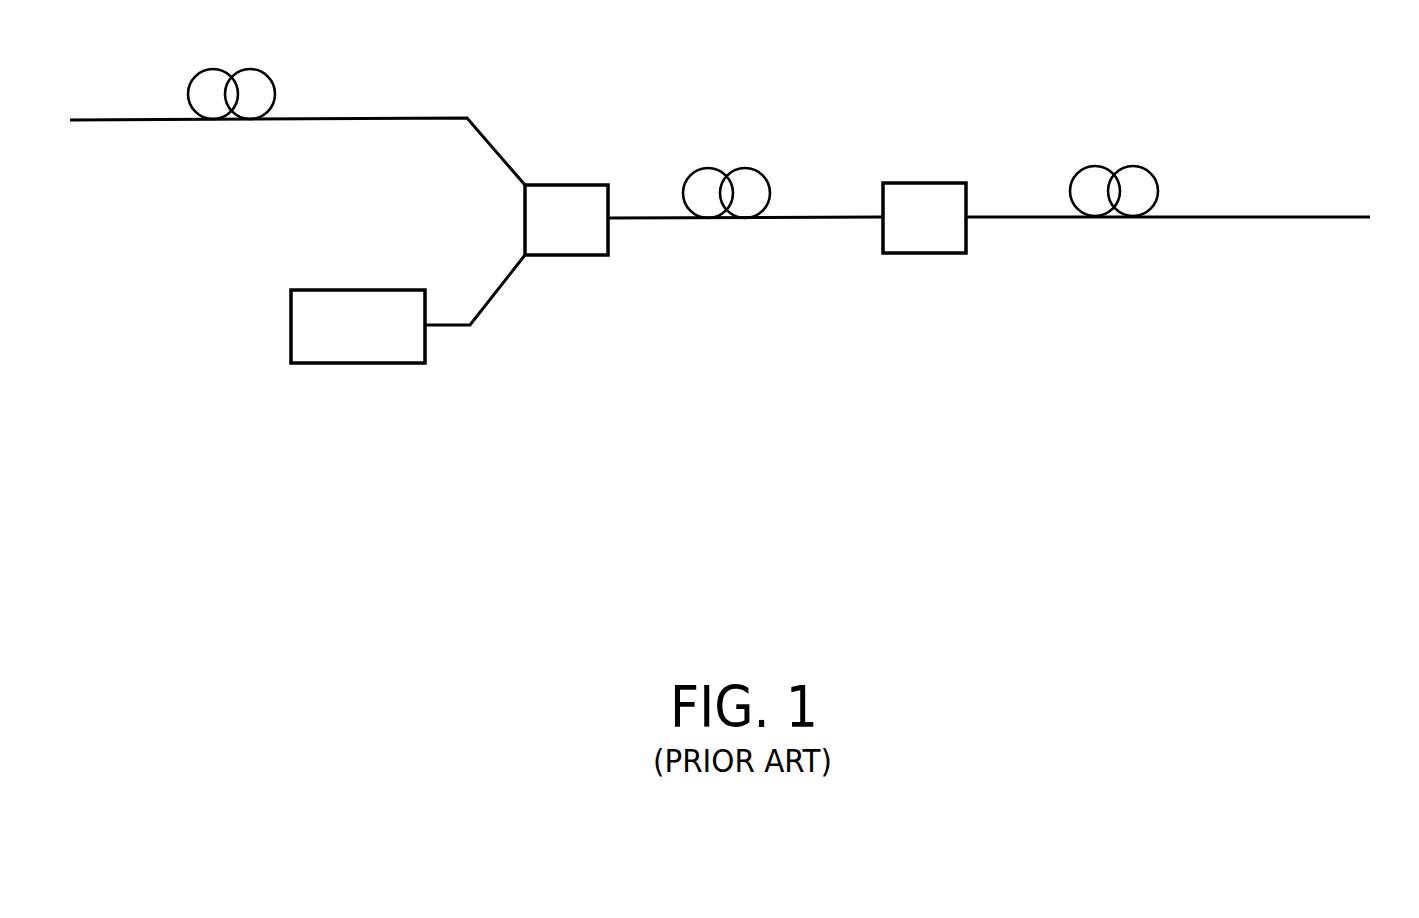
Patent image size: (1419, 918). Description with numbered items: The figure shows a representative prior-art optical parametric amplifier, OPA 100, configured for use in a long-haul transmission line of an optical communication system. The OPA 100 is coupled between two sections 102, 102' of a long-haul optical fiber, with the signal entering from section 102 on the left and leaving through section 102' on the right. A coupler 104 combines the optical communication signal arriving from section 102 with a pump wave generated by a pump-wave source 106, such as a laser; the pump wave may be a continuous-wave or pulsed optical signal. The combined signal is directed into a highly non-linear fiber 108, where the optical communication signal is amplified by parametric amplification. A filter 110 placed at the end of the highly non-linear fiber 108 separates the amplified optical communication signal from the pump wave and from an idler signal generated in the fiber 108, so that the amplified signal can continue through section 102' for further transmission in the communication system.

The OPA 100 is at (742, 325).
The section 102 is at (297, 108).
The section 102' is at (1168, 166).
The coupler 104 is at (557, 185).
The pump-wave source 106 is at (360, 290).
The highly non-linear fiber 108 is at (745, 168).
The filter 110 is at (922, 183).